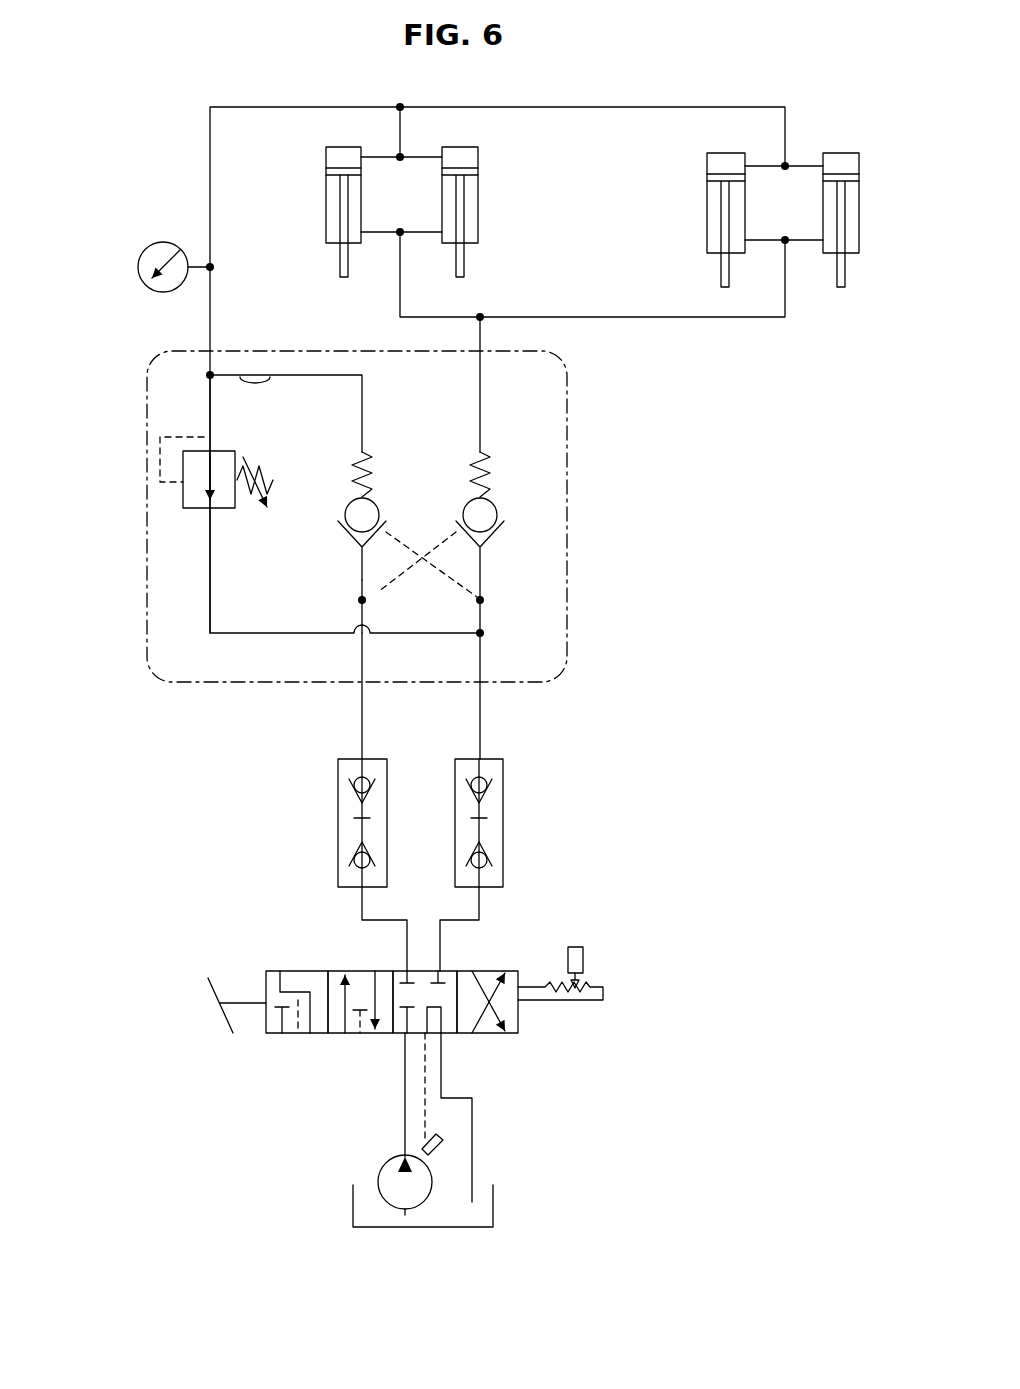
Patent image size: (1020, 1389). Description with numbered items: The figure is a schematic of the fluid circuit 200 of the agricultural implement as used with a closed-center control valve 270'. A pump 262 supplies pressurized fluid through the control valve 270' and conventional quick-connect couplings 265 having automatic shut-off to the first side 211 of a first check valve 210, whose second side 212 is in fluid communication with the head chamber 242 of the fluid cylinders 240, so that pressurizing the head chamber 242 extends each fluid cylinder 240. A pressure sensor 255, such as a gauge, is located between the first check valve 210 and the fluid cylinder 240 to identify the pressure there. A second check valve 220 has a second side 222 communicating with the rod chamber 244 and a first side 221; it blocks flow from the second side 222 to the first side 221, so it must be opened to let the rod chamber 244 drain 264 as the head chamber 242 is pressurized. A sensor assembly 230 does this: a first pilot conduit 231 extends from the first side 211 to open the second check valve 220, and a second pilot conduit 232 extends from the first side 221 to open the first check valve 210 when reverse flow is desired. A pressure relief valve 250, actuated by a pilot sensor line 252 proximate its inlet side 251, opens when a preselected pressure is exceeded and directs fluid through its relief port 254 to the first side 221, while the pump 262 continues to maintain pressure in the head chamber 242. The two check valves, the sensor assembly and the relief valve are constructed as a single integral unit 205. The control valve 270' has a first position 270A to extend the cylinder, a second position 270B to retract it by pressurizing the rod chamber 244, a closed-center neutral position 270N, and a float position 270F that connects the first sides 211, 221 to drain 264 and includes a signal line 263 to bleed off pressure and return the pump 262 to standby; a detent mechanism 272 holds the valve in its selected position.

The fluid circuit 200 is at (200, 125).
The single integral unit 205 is at (567, 522).
The first check valve 210 is at (420, 537).
The first side of the first check valve 211 is at (362, 580).
The second side of the first check valve 212 is at (240, 377).
The second check valve 220 is at (505, 498).
The first side of the second check valve 221 is at (482, 662).
The second side of the second check valve 222 is at (485, 373).
The sensor assembly 230 is at (387, 478).
The first pilot conduit 231 is at (370, 585).
The second pilot conduit 232 is at (500, 577).
The fluid cylinder 240 is at (325, 185).
The head chamber 242 is at (345, 160).
The rod chamber 244 is at (333, 222).
The pressure relief valve 250 is at (183, 498).
The inlet side of the pressure relief valve 251 is at (210, 412).
The pilot sensor line 252 is at (152, 447).
The relief port 254 is at (222, 636).
The pressure sensor 255 is at (155, 247).
The pump 262 is at (385, 1172).
The signal line 263 is at (425, 1103).
The drain 264 is at (472, 1118).
The quick-connect couplings 265 is at (503, 810).
The float position 270F is at (300, 975).
The first position 270A is at (330, 1035).
The neutral position 270N is at (446, 1035).
The second position 270B is at (510, 1020).
The closed-center control valve 270' is at (631, 993).
The detent mechanism 272 is at (583, 950).